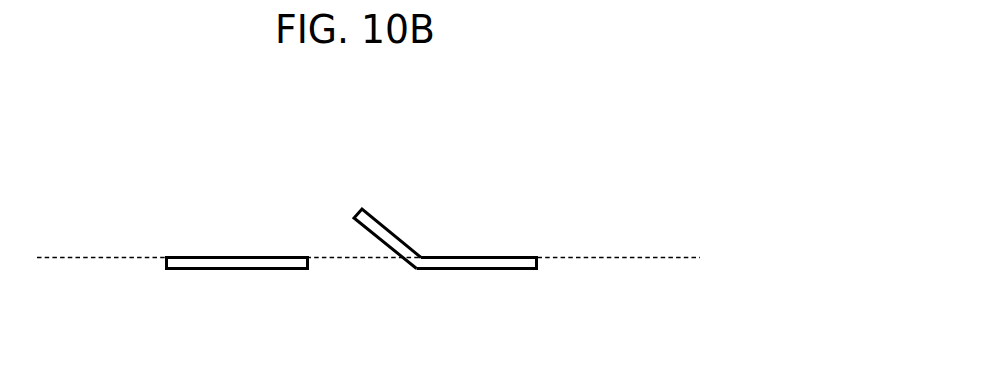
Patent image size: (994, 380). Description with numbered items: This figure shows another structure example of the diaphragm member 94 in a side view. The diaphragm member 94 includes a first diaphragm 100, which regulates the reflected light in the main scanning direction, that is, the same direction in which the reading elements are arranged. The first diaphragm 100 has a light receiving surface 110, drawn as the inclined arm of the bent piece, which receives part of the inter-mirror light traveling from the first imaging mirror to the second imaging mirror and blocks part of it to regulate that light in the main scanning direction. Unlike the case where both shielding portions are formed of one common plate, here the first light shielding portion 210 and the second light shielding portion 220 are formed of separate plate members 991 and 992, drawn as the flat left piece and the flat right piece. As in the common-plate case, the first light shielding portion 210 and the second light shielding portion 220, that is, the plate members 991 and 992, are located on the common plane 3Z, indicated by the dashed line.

The diaphragm member 94 is at (531, 186).
The first diaphragm 100 is at (443, 237).
The light receiving surface 110 is at (378, 215).
The second light shielding portion 220 is at (433, 254).
The first light shielding portion 210 is at (296, 256).
The plate member 991 is at (237, 262).
The plate member 992 is at (477, 262).
The common plane 3Z is at (663, 258).